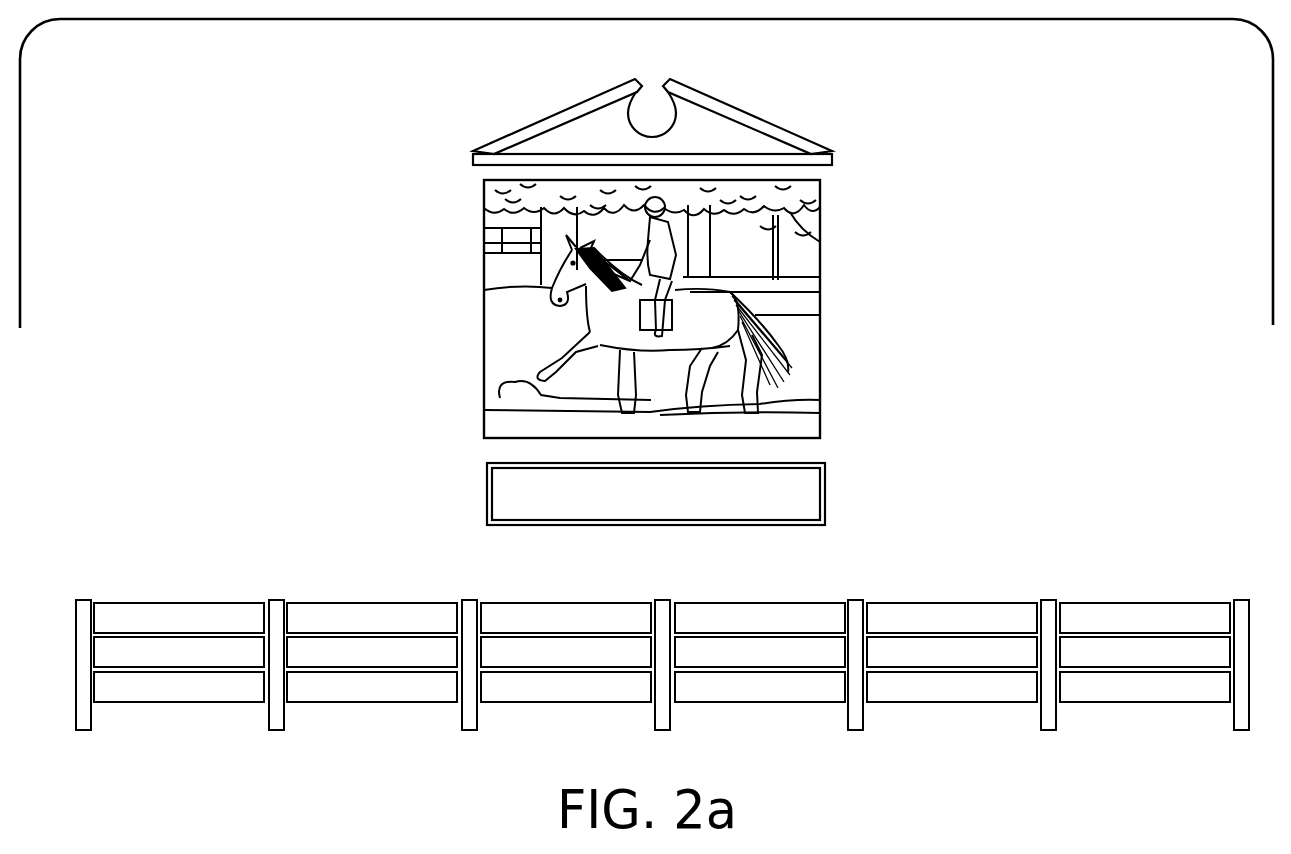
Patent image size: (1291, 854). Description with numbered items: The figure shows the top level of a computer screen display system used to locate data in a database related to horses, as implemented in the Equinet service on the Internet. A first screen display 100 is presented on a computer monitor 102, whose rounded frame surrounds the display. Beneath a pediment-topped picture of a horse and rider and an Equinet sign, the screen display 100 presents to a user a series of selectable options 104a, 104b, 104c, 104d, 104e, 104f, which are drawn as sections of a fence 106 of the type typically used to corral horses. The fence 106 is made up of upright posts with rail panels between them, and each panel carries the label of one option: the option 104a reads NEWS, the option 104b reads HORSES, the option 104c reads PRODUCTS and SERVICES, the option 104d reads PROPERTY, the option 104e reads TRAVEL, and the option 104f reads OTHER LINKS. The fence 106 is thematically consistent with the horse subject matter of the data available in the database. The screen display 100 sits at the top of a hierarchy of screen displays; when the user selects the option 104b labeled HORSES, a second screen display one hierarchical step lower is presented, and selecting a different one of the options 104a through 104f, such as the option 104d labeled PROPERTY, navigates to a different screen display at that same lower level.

The first screen display 100 is at (1043, 307).
The computer monitor 102 is at (21, 190).
The selectable option 104a is at (121, 600).
The selectable option 104b is at (311, 600).
The selectable option 104c is at (504, 600).
The selectable option 104d is at (703, 600).
The selectable option 104e is at (891, 600).
The selectable option 104f is at (1083, 600).
The fence 106 is at (410, 757).